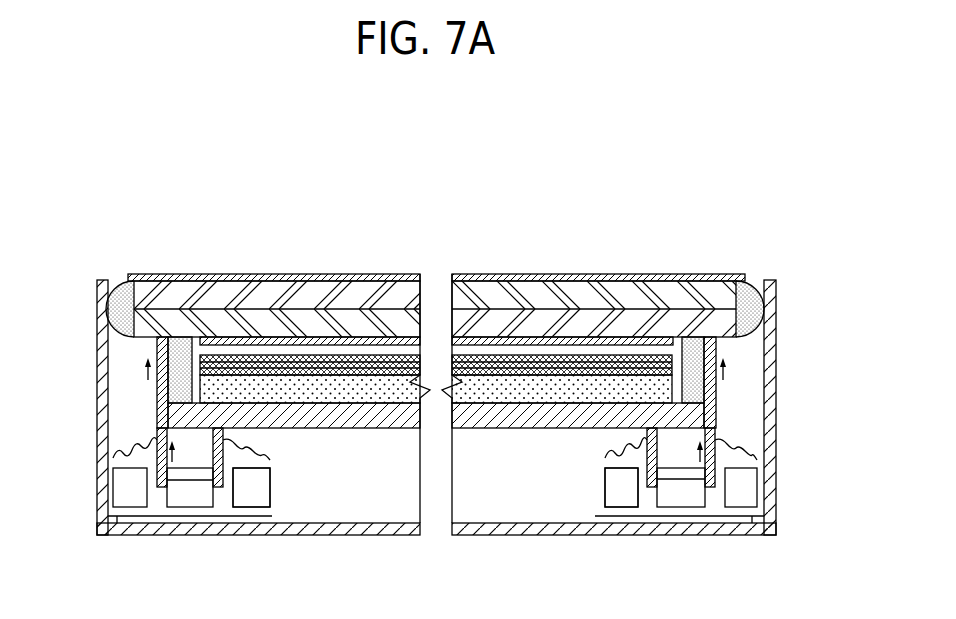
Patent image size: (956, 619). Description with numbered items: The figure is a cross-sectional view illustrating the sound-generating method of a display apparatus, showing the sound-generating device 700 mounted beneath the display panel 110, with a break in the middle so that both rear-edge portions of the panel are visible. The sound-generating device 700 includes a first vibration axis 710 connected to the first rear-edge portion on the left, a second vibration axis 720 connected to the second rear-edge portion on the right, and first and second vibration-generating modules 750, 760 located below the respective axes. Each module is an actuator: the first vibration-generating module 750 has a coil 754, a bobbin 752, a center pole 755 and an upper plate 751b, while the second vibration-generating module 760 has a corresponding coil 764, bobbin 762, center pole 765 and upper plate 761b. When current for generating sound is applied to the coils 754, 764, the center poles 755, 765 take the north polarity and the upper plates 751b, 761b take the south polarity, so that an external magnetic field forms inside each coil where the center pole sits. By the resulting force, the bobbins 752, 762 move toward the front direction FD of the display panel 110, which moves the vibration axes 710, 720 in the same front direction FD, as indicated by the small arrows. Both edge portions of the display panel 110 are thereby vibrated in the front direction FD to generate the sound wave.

The display panel 110 is at (151, 257).
The front direction FD is at (147, 372).
The first vibration axis 710 is at (157, 418).
The second vibration axis 720 is at (716, 416).
The sound-generating device 700 is at (435, 489).
The first vibration-generating module 750 is at (266, 489).
The upper plate 751b is at (262, 503).
The first bobbin 752 is at (216, 487).
The first coil 754 is at (156, 487).
The first center pole 755 is at (192, 481).
The second vibration-generating module 760 is at (604, 489).
The upper plate 761b is at (612, 503).
The bobbin 762 is at (652, 487).
The coil 764 is at (713, 487).
The center pole 765 is at (679, 480).